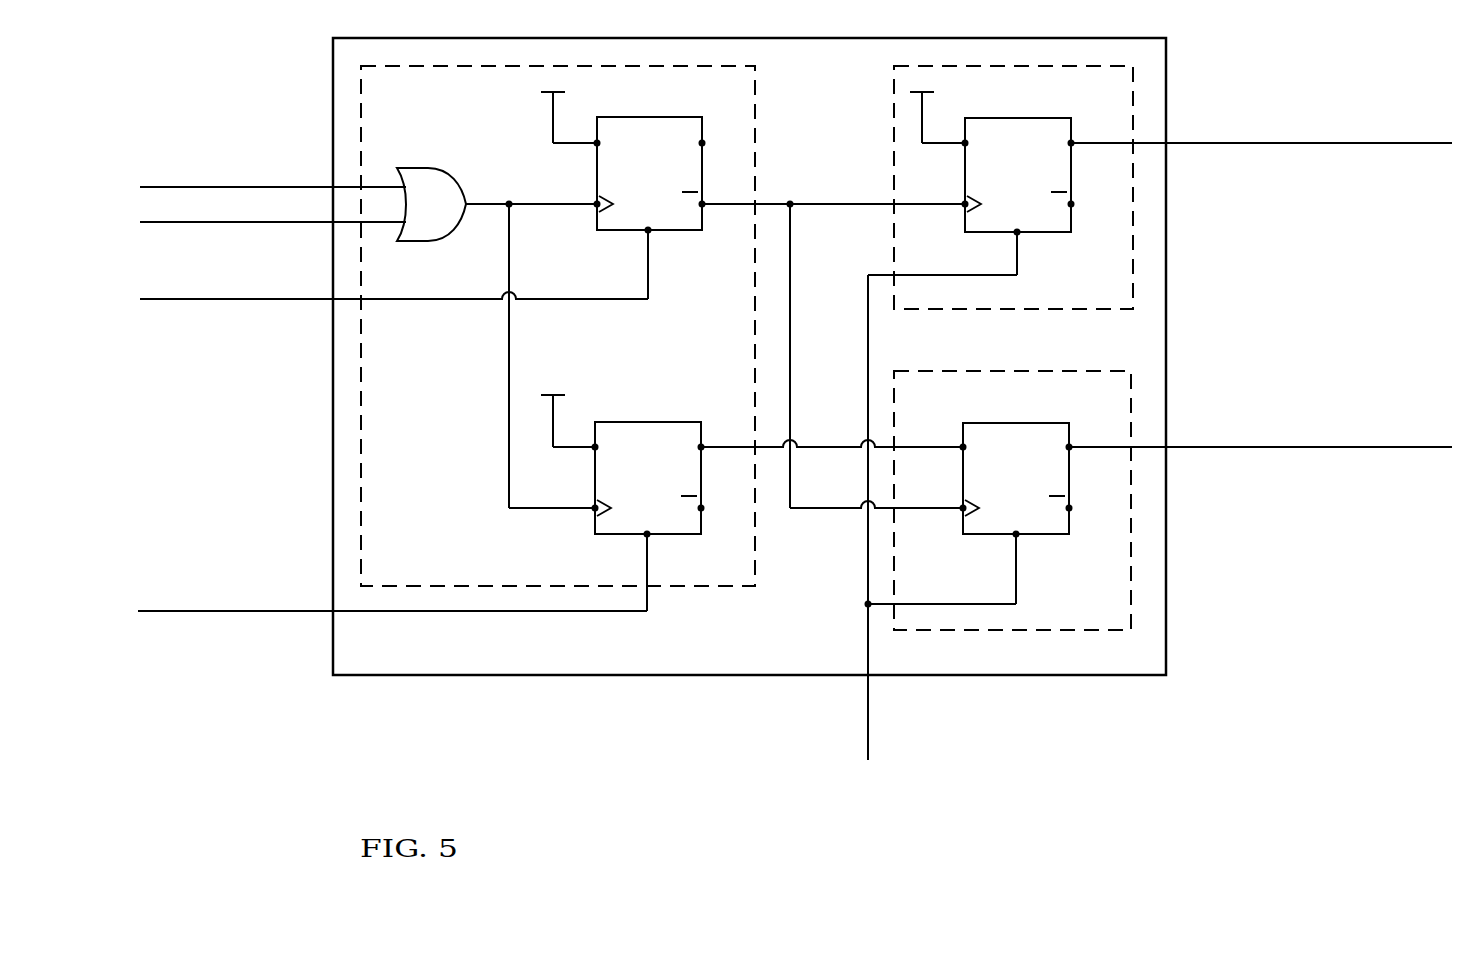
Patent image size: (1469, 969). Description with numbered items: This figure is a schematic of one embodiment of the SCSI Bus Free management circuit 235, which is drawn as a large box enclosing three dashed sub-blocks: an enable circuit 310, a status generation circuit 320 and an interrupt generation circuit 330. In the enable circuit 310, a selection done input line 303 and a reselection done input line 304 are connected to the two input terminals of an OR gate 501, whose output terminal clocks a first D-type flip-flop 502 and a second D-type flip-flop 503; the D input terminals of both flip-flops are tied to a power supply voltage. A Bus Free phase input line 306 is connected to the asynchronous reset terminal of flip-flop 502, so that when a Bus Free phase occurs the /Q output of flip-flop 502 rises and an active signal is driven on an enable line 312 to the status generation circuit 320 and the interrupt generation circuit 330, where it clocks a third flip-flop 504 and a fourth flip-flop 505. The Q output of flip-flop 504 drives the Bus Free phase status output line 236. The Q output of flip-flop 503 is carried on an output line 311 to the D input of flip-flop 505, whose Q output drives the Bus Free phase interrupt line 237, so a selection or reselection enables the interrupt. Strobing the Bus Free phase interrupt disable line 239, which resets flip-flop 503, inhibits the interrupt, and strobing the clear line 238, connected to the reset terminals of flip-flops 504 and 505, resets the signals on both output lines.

The Bus Free management circuit 235 is at (749, 356).
The Bus Free phase status output line 236 is at (1257, 146).
The Bus Free phase interrupt line 237 is at (1257, 450).
The clear line 238 is at (868, 731).
The Bus Free phase interrupt disable line 239 is at (243, 613).
The selection done input line 303 is at (148, 187).
The reselection done input line 304 is at (151, 223).
The Bus Free phase input line 306 is at (163, 300).
The enable circuit 310 is at (725, 582).
The output line 311 is at (824, 452).
The enable line 312 is at (829, 207).
The status generation circuit 320 is at (1080, 302).
The interrupt generation circuit 330 is at (1047, 627).
The OR gate 501 is at (427, 168).
The first D-type flip-flop 502 is at (670, 117).
The second D-type flip-flop 503 is at (670, 422).
The third flip-flop 504 is at (1038, 118).
The fourth flip-flop 505 is at (1036, 423).